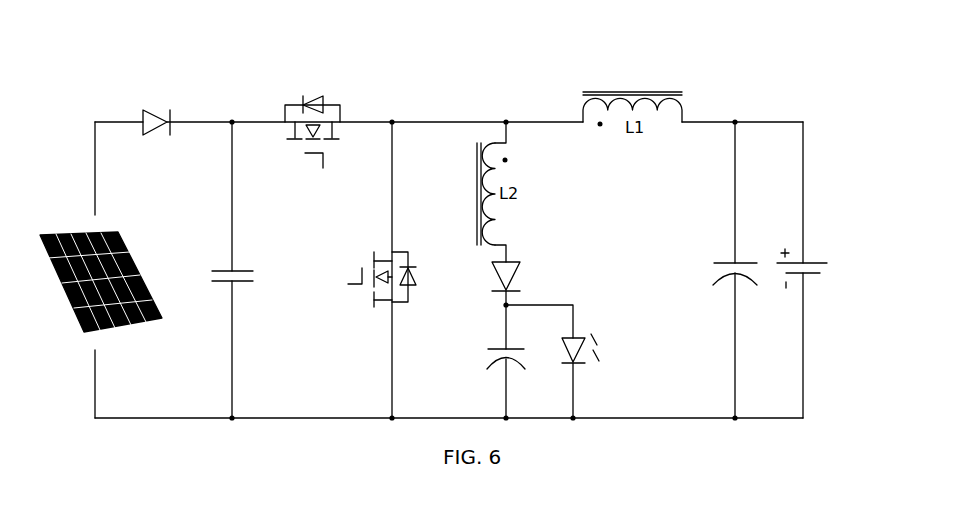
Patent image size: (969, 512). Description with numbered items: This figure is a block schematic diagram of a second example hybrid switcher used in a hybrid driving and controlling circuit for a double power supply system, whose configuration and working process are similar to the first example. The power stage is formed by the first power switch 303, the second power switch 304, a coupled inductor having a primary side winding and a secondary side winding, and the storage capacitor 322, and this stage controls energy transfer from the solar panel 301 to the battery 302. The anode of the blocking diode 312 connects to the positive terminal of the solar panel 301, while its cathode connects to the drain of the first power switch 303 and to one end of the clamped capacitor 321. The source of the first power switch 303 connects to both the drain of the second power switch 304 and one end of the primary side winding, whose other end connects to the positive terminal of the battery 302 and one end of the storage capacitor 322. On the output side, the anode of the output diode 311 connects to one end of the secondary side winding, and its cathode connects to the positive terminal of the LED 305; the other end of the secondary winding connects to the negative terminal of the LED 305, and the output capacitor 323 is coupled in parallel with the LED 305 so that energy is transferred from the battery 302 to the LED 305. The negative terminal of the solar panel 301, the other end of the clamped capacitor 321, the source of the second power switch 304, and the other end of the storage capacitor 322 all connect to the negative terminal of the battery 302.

The solar panel 301 is at (120, 235).
The battery 302 is at (824, 258).
The first power switch 303 is at (318, 96).
The second power switch 304 is at (380, 299).
The LED 305 is at (586, 337).
The output diode 311 is at (513, 268).
The blocking diode 312 is at (148, 108).
The clamped capacitor 321 is at (245, 271).
The storage capacitor 322 is at (727, 262).
The output capacitor 323 is at (498, 349).